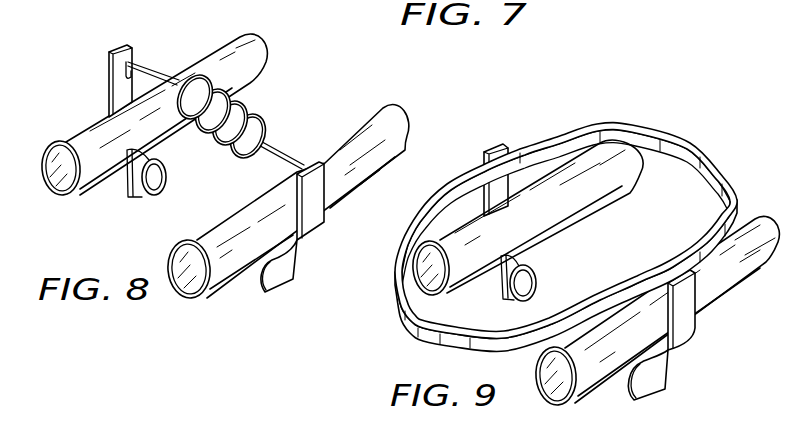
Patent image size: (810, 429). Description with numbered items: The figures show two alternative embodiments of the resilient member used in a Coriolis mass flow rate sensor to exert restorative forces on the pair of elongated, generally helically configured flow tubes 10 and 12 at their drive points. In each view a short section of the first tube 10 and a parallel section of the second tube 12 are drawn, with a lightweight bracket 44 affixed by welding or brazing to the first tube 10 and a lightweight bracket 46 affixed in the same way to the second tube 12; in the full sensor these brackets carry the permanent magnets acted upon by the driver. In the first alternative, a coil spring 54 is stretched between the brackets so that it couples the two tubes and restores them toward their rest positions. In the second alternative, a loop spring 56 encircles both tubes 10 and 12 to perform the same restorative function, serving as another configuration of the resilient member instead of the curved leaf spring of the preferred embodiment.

In FIG. 8, the tube 10 is at (73, 192).
In FIG. 9, the tube 10 is at (576, 216).
In FIG. 8, the tube 12 is at (168, 262).
In FIG. 9, the tube 12 is at (537, 396).
In FIG. 8, the bracket 44 is at (109, 72).
In FIG. 9, the bracket 44 is at (493, 148).
In FIG. 8, the bracket 46 is at (294, 263).
In FIG. 9, the bracket 46 is at (658, 388).
In FIG. 8, the coil spring 54 is at (238, 148).
In FIG. 9, the loop spring 56 is at (433, 340).